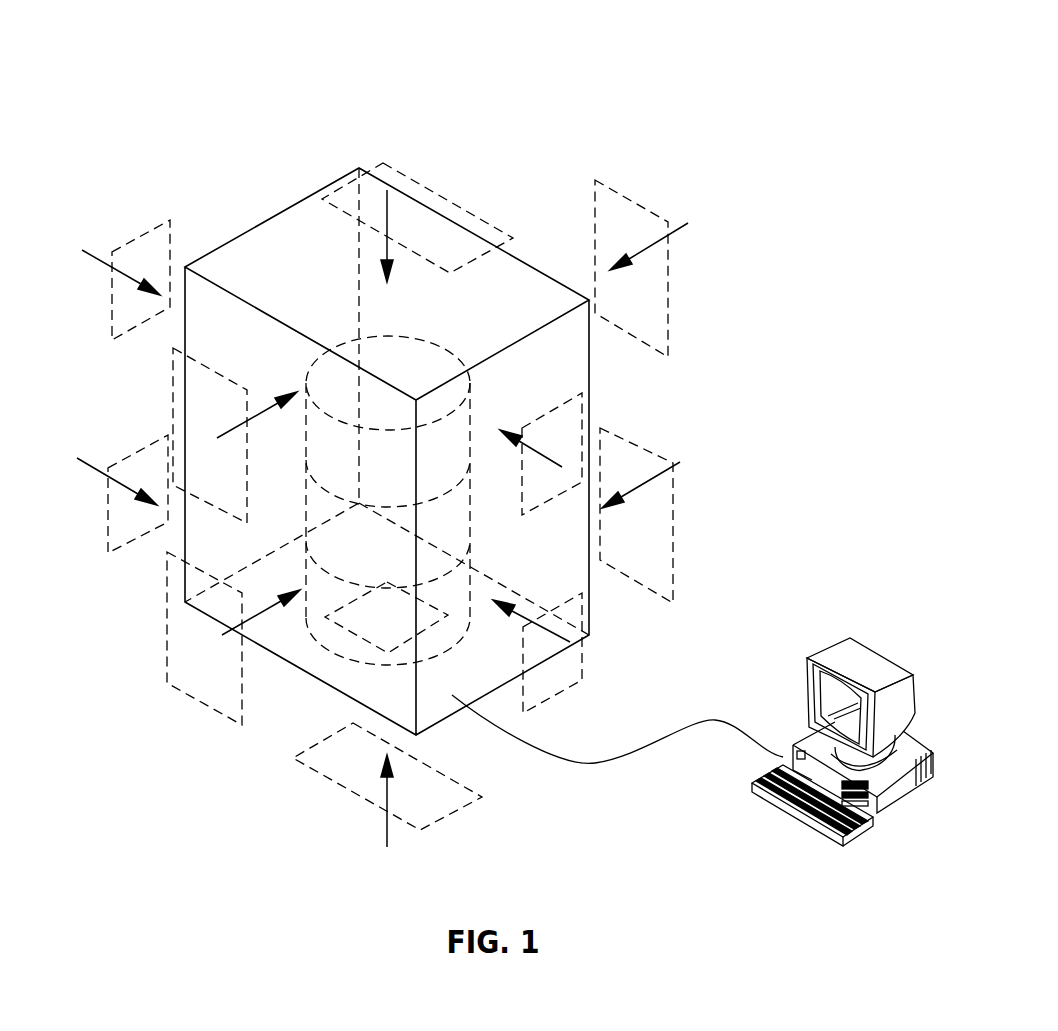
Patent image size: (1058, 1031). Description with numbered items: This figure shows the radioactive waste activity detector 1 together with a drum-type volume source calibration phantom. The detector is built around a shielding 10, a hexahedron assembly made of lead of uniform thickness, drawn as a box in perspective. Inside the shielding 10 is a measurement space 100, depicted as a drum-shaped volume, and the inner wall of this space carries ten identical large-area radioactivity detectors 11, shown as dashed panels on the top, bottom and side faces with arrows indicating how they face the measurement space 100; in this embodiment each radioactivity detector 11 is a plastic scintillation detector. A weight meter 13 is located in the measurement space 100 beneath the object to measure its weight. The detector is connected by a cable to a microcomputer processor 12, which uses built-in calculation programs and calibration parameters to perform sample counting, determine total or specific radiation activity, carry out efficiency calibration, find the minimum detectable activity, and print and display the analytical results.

The radioactive waste activity detector 1 is at (226, 105).
The shielding 10 is at (296, 222).
The radioactivity detector 11 is at (134, 238).
The microcomputer processor 12 is at (865, 660).
The weight meter 13 is at (327, 640).
The measurement space 100 is at (522, 567).